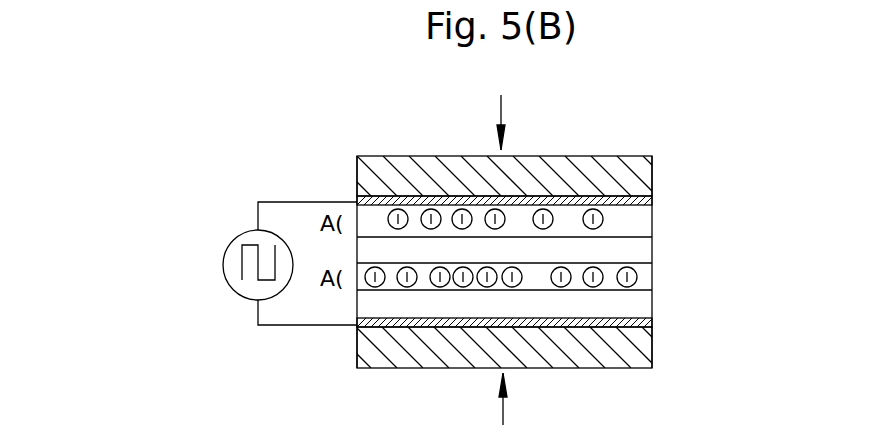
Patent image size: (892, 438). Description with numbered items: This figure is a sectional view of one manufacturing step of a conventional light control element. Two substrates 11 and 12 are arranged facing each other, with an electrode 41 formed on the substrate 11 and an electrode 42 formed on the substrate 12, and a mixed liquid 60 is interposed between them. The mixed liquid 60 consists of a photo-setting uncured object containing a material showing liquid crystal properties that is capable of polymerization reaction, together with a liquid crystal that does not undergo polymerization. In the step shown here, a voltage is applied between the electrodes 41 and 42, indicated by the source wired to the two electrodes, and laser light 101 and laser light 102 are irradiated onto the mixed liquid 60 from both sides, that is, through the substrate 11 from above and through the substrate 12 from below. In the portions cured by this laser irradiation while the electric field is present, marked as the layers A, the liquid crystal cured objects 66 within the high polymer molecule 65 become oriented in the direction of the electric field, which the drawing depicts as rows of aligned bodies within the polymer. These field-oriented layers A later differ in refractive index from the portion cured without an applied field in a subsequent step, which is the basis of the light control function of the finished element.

The substrate 11 is at (362, 180).
The substrate 12 is at (363, 355).
The electrode 41 is at (652, 199).
The electrode 42 is at (652, 318).
The mixed liquid 60 is at (640, 250).
The high polymer molecule 65 is at (640, 220).
The liquid crystal cured objects 66 is at (603, 218).
The laser light 101 is at (501, 113).
The laser light 102 is at (503, 417).